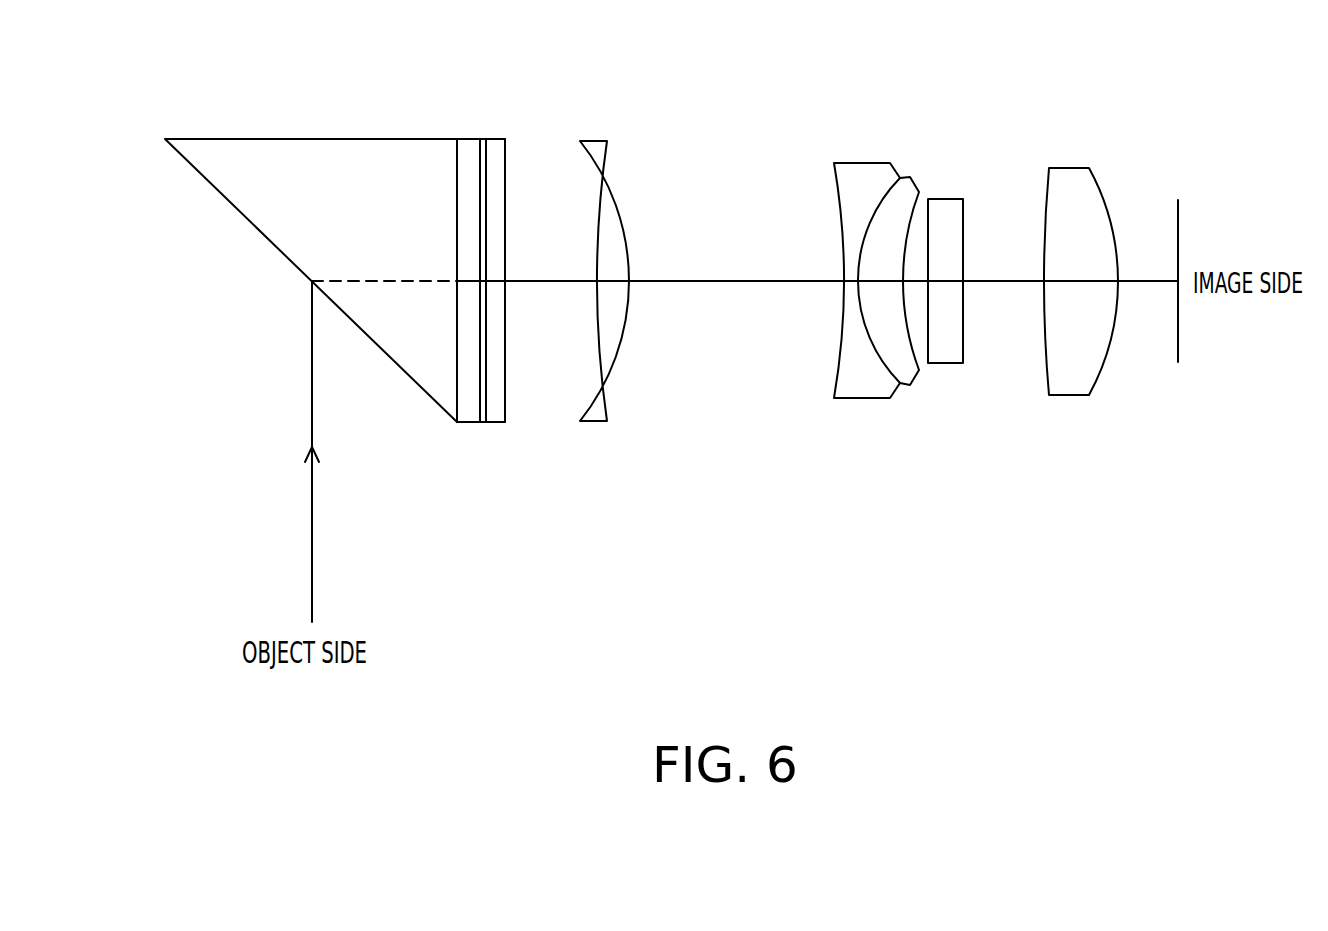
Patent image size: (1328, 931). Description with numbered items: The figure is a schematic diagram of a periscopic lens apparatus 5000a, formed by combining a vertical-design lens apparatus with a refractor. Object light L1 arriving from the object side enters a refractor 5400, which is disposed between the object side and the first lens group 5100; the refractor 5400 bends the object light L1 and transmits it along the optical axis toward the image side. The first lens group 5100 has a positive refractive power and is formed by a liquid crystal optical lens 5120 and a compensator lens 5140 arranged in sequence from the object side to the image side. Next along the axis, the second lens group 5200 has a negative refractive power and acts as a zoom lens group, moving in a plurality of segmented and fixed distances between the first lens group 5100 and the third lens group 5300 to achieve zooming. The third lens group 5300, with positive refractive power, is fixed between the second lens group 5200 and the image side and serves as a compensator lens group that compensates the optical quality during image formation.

The periscopic lens apparatus 5000a is at (1250, 669).
The refractor 5400 is at (347, 153).
The first lens group 5100 is at (541, 259).
The liquid crystal optical lens 5120 is at (512, 126).
The compensator lens 5140 is at (592, 155).
The second lens group 5200 is at (963, 437).
The third lens group 5300 is at (1122, 437).
The object light L1 is at (312, 377).